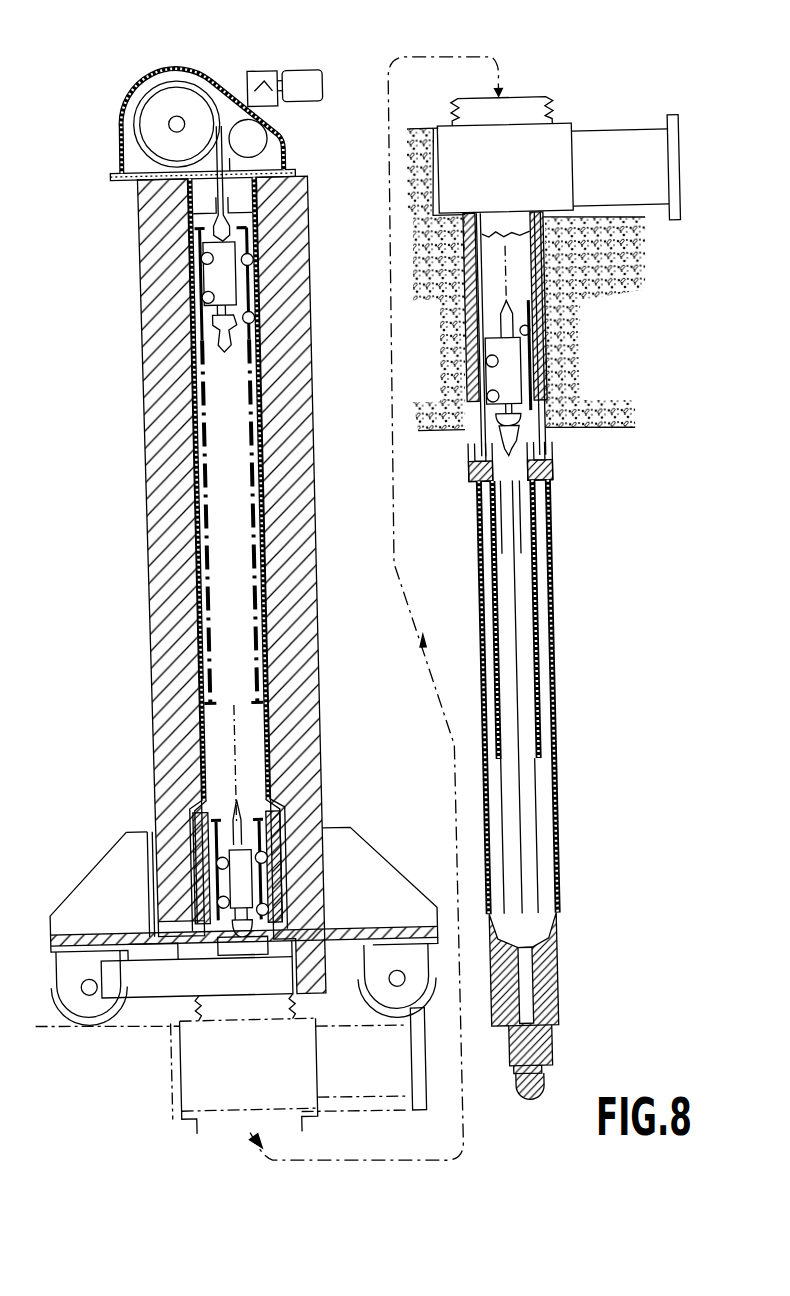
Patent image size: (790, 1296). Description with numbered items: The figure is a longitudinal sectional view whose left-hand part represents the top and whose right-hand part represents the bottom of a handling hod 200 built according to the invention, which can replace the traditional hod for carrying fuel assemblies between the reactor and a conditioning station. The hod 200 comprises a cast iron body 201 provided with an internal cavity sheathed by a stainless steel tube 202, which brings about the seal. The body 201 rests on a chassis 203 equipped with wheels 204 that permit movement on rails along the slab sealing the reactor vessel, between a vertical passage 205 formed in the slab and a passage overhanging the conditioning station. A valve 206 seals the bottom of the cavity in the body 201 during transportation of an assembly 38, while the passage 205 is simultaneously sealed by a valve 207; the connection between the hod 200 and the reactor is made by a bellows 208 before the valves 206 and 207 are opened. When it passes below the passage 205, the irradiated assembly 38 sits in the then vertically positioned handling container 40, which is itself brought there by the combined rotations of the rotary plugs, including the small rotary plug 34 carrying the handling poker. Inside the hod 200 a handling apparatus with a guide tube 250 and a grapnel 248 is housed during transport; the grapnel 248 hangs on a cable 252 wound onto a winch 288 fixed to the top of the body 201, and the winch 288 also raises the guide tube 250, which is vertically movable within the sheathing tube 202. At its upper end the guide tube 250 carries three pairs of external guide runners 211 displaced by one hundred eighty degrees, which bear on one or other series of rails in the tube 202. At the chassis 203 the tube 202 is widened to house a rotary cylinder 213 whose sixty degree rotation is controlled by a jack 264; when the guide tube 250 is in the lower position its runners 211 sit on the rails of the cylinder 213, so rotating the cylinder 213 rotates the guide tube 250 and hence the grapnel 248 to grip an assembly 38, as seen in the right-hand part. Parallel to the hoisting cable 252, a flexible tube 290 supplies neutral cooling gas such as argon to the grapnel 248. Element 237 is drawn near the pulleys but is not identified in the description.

The small rotary plug 34 is at (446, 420).
The assembly 38 is at (520, 687).
The handling container 40 is at (551, 864).
The handling hod 200 is at (137, 648).
The body 201 is at (170, 519).
The stainless steel tube 202 is at (260, 491).
The chassis 203 is at (123, 826).
The wheels 204 is at (91, 1007).
The vertical passage 205 is at (552, 445).
The valve 206 is at (254, 976).
The valve 207 is at (167, 1096).
The bellows 208 is at (279, 1009).
The external guide runners 211 is at (256, 318).
The rotary cylinder 213 is at (280, 813).
The guide pulley 237 is at (256, 125).
The grapnel 248 is at (213, 322).
The guide tube 250 is at (202, 401).
The cable 252 is at (209, 184).
The jack 264 is at (158, 916).
The winch 288 is at (171, 98).
The flexible tube 290 is at (292, 159).